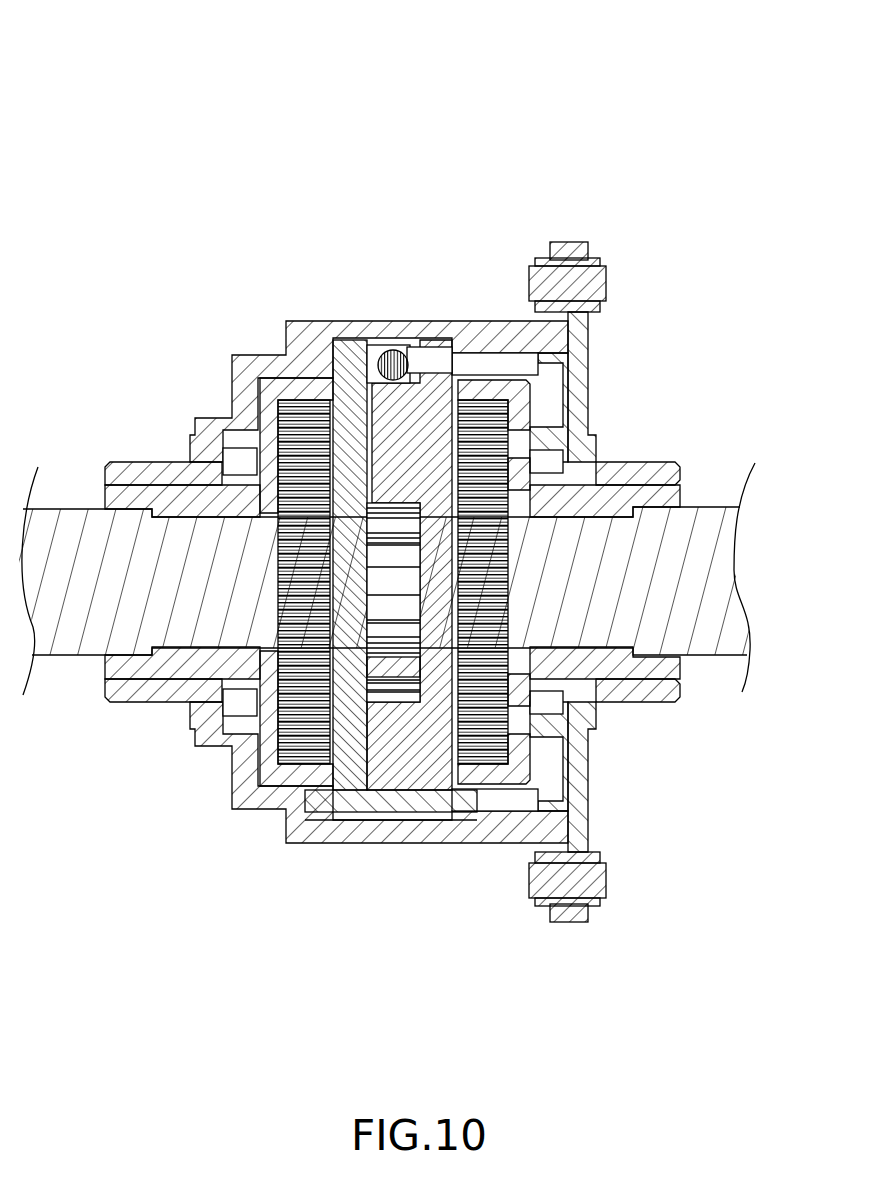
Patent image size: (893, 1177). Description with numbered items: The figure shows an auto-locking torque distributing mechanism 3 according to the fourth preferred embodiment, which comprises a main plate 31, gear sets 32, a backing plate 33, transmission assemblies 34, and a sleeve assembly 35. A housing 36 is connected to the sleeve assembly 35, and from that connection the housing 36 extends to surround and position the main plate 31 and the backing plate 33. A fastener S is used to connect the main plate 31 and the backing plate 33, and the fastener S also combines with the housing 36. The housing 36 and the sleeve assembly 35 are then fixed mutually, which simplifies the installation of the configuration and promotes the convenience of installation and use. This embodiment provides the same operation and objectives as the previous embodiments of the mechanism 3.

The auto-locking torque distributing mechanism 3 is at (150, 116).
The main plate 31 is at (431, 330).
The gear sets 32 is at (298, 385).
The backing plate 33 is at (362, 330).
The transmission assemblies 34 is at (602, 478).
The sleeve assembly 35 is at (600, 342).
The housing 36 is at (488, 320).
The fastener S is at (378, 806).